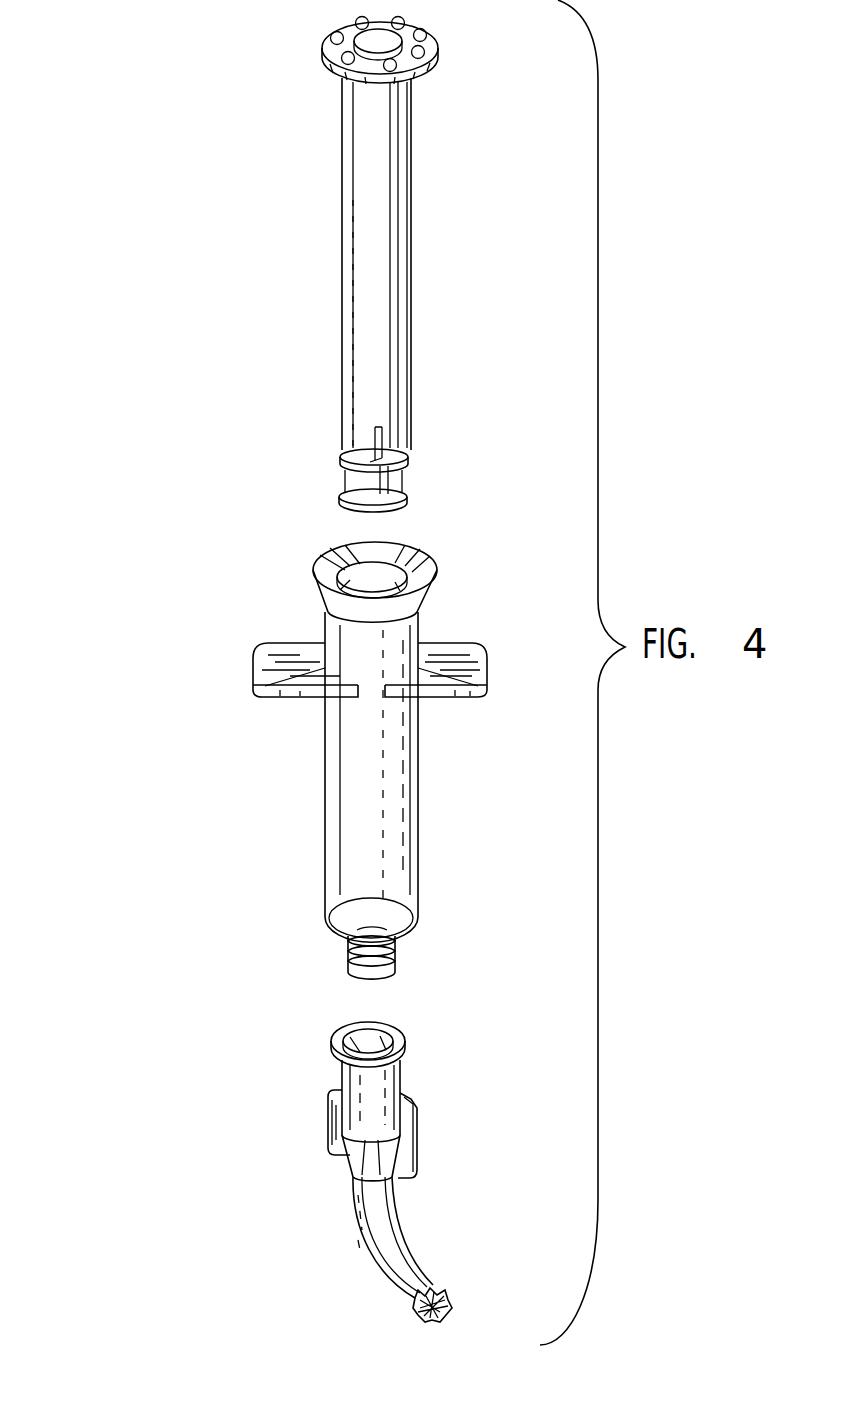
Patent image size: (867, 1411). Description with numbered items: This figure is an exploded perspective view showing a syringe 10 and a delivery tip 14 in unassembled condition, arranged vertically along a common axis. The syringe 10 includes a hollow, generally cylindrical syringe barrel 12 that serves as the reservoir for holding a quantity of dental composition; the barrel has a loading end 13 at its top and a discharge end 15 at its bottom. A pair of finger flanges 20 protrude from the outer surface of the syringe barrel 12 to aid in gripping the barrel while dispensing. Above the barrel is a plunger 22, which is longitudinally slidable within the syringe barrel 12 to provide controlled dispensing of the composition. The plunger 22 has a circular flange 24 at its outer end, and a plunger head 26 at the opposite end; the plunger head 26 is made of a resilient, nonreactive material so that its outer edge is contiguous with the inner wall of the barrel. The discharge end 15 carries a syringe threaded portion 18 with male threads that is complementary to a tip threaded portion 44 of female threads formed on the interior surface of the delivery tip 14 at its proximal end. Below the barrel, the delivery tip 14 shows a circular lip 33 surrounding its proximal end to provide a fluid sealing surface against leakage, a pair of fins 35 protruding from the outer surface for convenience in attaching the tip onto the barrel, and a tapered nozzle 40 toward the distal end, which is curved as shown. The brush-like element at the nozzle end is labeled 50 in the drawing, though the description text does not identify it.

The syringe 10 is at (170, 483).
The syringe barrel 12 is at (362, 799).
The loading end 13 is at (380, 562).
The delivery tip 14 is at (340, 1223).
The discharge end 15 is at (395, 977).
The syringe threaded portion 18 is at (353, 962).
The finger flanges 20 is at (292, 652).
The plunger 22 is at (382, 244).
The circular flange 24 is at (410, 34).
The plunger head 26 is at (383, 486).
The circular lip 33 is at (403, 1046).
The fins 35 is at (410, 1146).
The tapered nozzle 40 is at (388, 1240).
The tip threaded portion 44 is at (372, 1033).
The brush tip 50 is at (443, 1300).